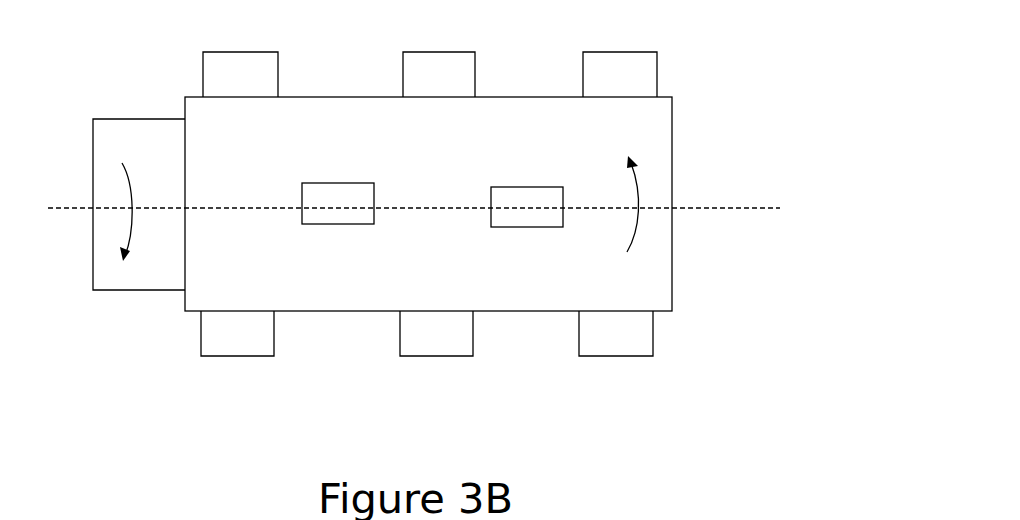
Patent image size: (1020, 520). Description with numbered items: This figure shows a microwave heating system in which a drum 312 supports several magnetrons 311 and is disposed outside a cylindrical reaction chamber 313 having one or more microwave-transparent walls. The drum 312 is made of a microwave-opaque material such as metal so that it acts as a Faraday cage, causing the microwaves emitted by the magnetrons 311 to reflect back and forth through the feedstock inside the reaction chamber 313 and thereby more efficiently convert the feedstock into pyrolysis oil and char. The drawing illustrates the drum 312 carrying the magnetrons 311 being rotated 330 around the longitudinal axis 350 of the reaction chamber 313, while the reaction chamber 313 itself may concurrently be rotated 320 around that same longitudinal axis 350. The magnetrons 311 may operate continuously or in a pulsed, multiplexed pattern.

The magnetron 311 is at (262, 67).
The drum 312 is at (660, 138).
The reaction chamber 313 is at (119, 127).
The rotation of the reaction chamber 320 is at (128, 172).
The rotation of the drum 330 is at (636, 188).
The longitudinal axis 350 is at (768, 208).